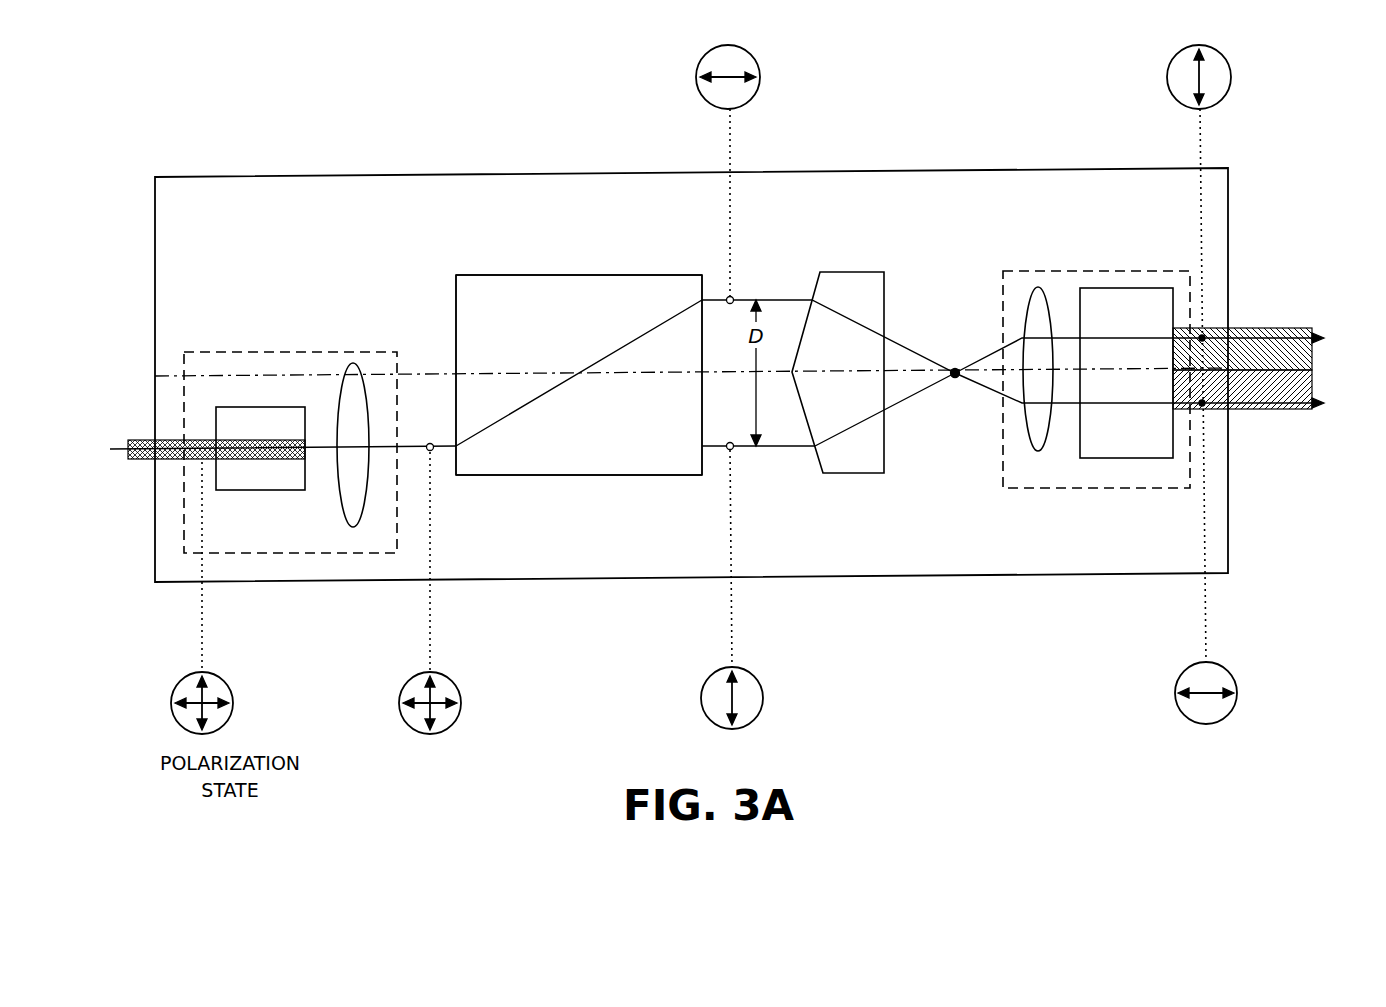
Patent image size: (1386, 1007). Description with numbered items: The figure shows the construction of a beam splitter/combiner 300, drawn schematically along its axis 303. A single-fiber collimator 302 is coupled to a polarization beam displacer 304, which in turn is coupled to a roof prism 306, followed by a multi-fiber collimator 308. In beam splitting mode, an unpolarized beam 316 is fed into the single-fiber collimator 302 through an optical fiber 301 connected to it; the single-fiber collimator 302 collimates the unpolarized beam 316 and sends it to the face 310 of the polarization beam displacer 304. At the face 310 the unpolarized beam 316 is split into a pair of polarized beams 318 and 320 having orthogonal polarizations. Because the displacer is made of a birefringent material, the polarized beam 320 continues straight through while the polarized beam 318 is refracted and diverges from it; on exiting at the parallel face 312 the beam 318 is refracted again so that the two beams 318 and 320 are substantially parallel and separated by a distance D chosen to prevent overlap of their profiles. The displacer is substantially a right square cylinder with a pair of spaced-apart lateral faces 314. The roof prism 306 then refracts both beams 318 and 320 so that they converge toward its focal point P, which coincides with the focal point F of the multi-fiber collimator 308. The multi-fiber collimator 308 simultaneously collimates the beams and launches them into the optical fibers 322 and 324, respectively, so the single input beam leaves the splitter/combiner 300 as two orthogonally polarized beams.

The beam splitter/combiner 300 is at (462, 170).
The optical fiber 301 is at (135, 462).
The single-fiber collimator 302 is at (200, 348).
The axis 303 is at (410, 370).
The polarization beam displacer 304 is at (630, 465).
The roof prism 306 is at (855, 468).
The multi-fiber collimator 308 is at (1014, 492).
The face 310 is at (455, 295).
The face 312 is at (702, 298).
The lateral faces 314 is at (548, 273).
The unpolarized beam 316 is at (120, 437).
The polarized beam 318 is at (778, 297).
The polarized beam 320 is at (770, 446).
The optical fiber 322 is at (1312, 358).
The optical fiber 324 is at (1312, 387).